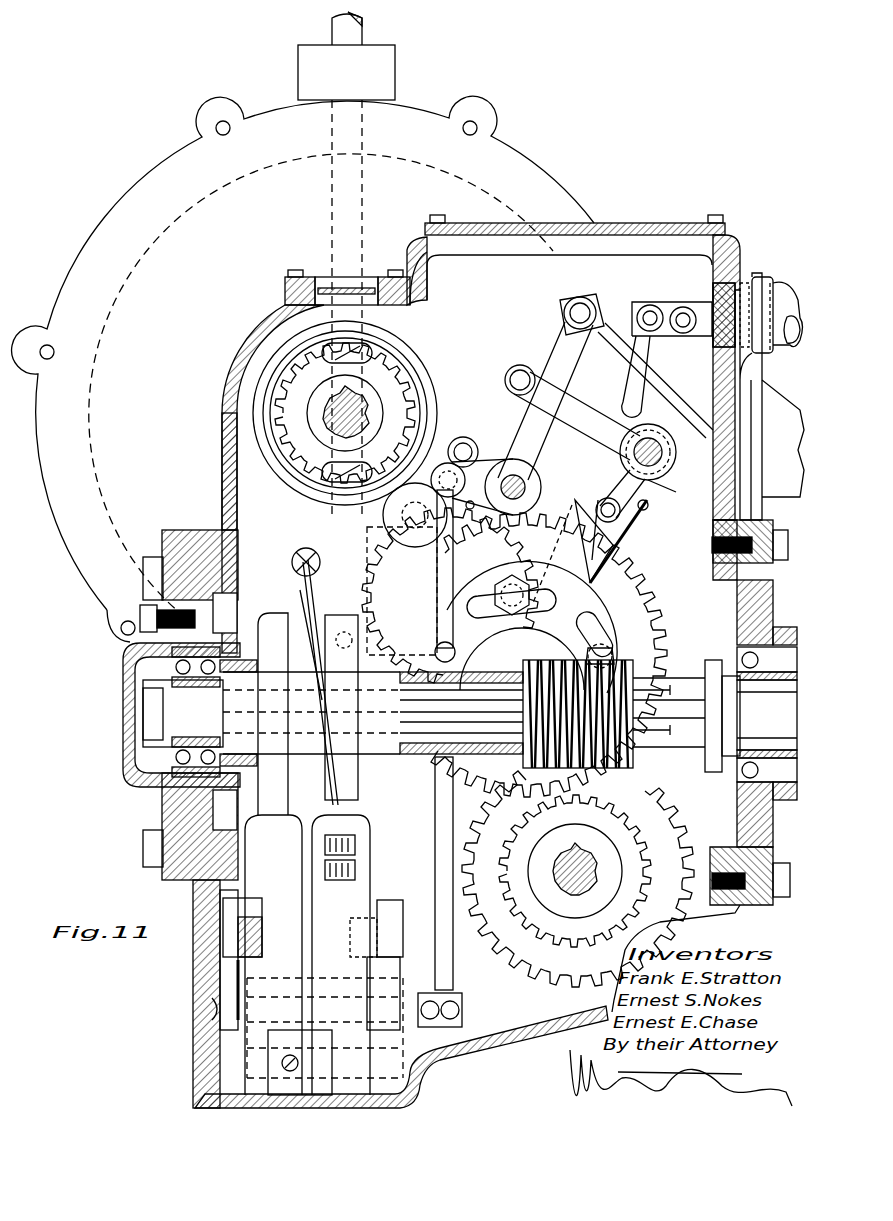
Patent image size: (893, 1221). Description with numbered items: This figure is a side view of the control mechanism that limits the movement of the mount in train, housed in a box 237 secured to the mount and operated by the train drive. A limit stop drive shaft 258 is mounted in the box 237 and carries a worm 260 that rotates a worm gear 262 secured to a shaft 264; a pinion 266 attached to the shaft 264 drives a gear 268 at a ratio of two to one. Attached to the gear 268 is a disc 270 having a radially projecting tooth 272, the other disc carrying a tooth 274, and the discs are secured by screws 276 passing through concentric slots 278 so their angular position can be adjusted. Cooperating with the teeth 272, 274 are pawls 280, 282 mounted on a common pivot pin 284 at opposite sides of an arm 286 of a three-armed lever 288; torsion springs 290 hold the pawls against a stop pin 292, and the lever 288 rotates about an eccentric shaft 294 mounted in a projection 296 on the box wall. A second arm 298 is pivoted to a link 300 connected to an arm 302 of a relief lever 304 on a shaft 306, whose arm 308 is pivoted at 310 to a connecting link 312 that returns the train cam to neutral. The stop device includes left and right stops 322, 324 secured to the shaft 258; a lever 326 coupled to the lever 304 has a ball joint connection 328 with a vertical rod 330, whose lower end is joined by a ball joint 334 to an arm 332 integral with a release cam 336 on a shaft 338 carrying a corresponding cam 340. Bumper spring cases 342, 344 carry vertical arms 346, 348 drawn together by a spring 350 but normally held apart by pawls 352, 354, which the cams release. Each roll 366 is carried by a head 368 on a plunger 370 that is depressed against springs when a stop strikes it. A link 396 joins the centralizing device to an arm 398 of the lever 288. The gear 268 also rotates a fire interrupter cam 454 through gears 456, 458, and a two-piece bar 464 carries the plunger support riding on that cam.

The box 237 is at (628, 213).
The limit stop drive shaft 258 is at (680, 740).
The worm 260 is at (625, 737).
The worm gear 262 is at (672, 835).
The shaft 264 is at (578, 890).
The pinion 266 is at (622, 815).
The gear 268 is at (622, 608).
The disc 270 is at (600, 600).
The tooth 272 is at (567, 560).
The tooth 274 is at (487, 513).
The screws 276 is at (608, 652).
The concentric slots 278 is at (598, 632).
The pawl 280 is at (611, 555).
The pawl 282 is at (612, 508).
The pivot pin 284 is at (616, 540).
The arm 286 is at (651, 494).
The three-armed lever 288 is at (627, 412).
The torsion springs 290 is at (604, 476).
The stop pin 292 is at (646, 507).
The eccentric shaft 294 is at (661, 449).
The projection 296 is at (700, 468).
The second arm 298 is at (577, 408).
The link 300 is at (500, 390).
The arm 302 is at (476, 420).
The relief lever 304 is at (526, 500).
The shaft 306 is at (508, 440).
The arm 308 is at (556, 347).
The pivot 310 is at (586, 305).
The connecting link 312 is at (605, 325).
The left stop 322 is at (278, 620).
The right stop 324 is at (345, 620).
The lever 326 is at (466, 441).
The ball joint connection 328 is at (356, 462).
The vertical rod 330 is at (445, 595).
The arm 332 is at (428, 989).
The ball joint 334 is at (462, 1020).
The release cam 336 is at (388, 970).
The shaft 338 is at (197, 1037).
The cam 340 is at (228, 972).
The bumper spring case 342 is at (273, 955).
The bumper spring case 344 is at (350, 933).
The vertical arm 346 is at (302, 632).
The vertical arm 348 is at (314, 610).
The spring 350 is at (302, 553).
The pawl 352 is at (230, 910).
The pawl 354 is at (388, 901).
The roll 366 is at (343, 707).
The head 368 is at (365, 777).
The plunger 370 is at (370, 822).
The link 396 is at (680, 310).
The arm 398 is at (655, 380).
The cam 454 is at (185, 225).
The gear 456 is at (380, 514).
The gear 458 is at (290, 452).
The two-piece bar 464 is at (356, 36).